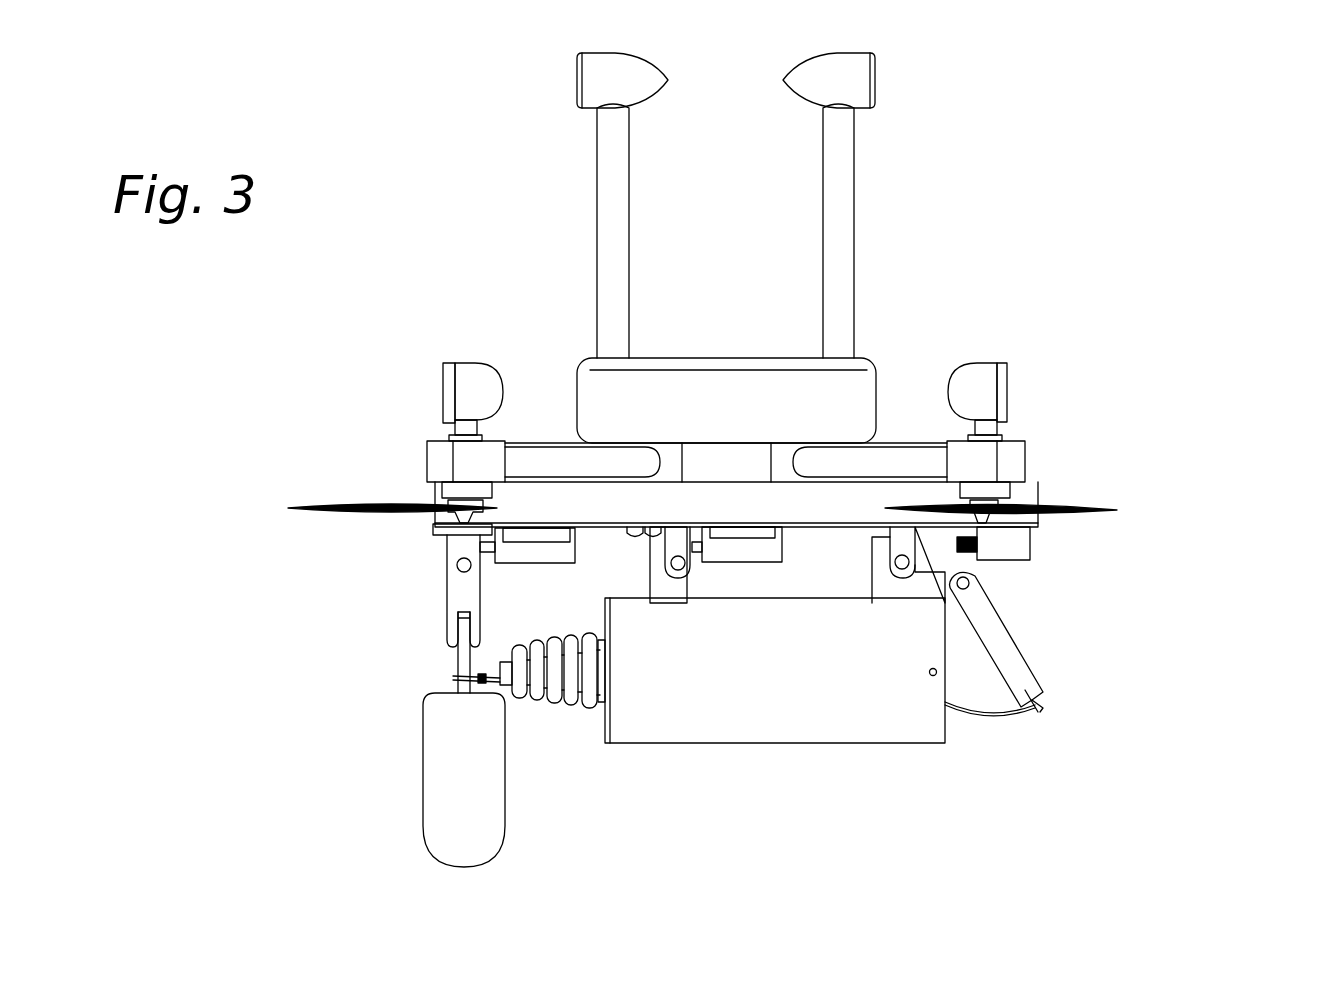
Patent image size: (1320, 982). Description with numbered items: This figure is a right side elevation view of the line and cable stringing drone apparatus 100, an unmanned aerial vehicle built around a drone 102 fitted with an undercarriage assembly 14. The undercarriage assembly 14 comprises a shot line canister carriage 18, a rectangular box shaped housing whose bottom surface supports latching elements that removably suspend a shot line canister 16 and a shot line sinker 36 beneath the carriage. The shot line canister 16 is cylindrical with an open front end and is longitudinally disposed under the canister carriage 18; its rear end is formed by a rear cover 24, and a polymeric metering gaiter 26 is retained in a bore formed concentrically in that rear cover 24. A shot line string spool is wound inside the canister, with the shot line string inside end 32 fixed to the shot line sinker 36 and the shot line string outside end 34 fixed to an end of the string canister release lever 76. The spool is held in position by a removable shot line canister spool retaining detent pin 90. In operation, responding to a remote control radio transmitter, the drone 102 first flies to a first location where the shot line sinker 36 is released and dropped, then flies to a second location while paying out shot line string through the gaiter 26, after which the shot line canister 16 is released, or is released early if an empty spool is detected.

The line and cable stringing drone apparatus 100 is at (1187, 160).
The drone 102 is at (716, 357).
The undercarriage assembly 14 is at (1040, 480).
The shot line canister carriage 18 is at (847, 528).
The shot line canister 16 is at (777, 744).
The rear cover 24 is at (603, 613).
The polymeric metering gaiter 26 is at (572, 705).
The shot line string inside end 32 is at (484, 683).
The shot line sinker 36 is at (422, 766).
The string canister release lever 76 is at (1007, 630).
The shot line canister spool retaining detent pin 90 is at (929, 671).
The shot line string outside end 34 is at (987, 717).